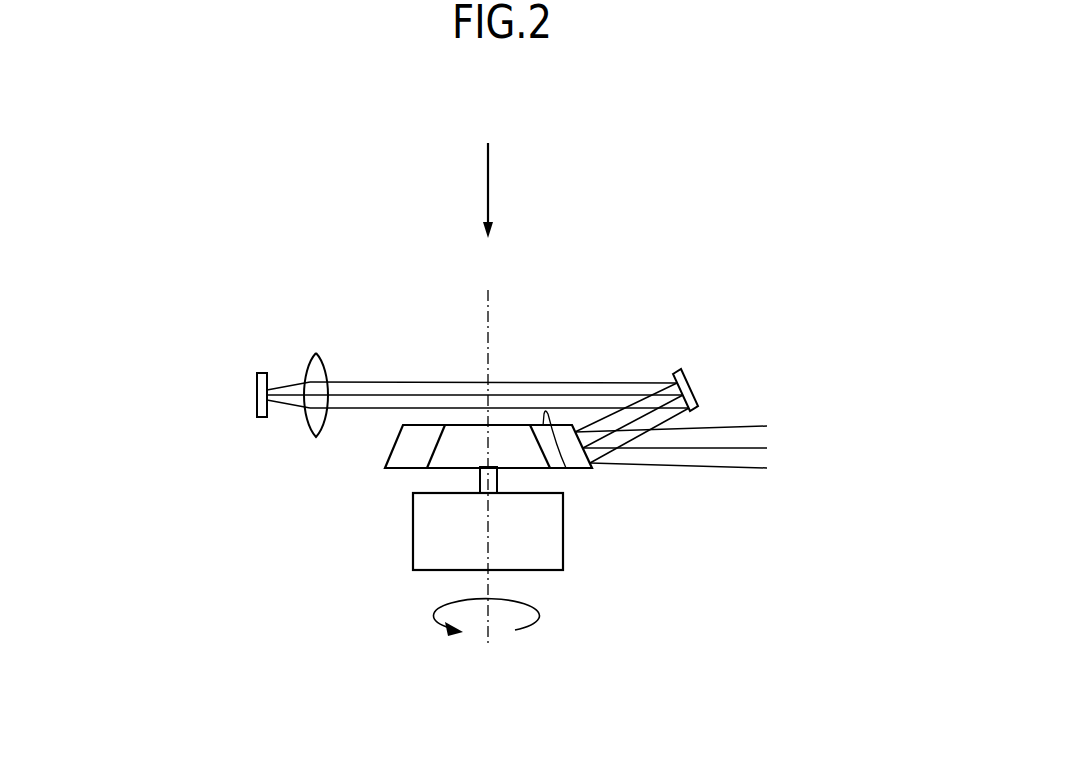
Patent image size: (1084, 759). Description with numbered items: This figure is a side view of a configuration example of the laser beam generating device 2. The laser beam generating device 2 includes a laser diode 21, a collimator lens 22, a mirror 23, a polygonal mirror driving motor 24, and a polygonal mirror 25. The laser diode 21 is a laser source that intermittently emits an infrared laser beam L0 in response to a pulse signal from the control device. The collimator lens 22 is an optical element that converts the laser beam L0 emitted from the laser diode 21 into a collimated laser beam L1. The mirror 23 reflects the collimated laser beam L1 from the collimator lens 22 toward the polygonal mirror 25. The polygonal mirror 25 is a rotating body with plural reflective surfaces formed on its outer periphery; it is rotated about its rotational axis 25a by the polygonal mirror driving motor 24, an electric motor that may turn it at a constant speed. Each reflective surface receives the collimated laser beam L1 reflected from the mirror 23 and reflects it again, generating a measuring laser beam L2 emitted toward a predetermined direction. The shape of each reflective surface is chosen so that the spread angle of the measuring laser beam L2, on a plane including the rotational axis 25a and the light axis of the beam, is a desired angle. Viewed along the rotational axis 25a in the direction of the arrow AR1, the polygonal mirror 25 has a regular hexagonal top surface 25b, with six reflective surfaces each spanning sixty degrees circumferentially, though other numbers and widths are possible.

The laser beam generating device 2 is at (614, 260).
The laser diode 21 is at (257, 378).
The collimator lens 22 is at (327, 370).
The mirror 23 is at (699, 388).
The polygonal mirror driving motor 24 is at (412, 564).
The polygonal mirror 25 is at (385, 468).
The rotational axis 25a is at (488, 333).
The top surface 25b is at (566, 468).
The arrow AR1 is at (487, 176).
The laser beam L0 is at (284, 364).
The collimated laser beam L1 is at (576, 366).
The measuring laser beam L2 is at (776, 414).